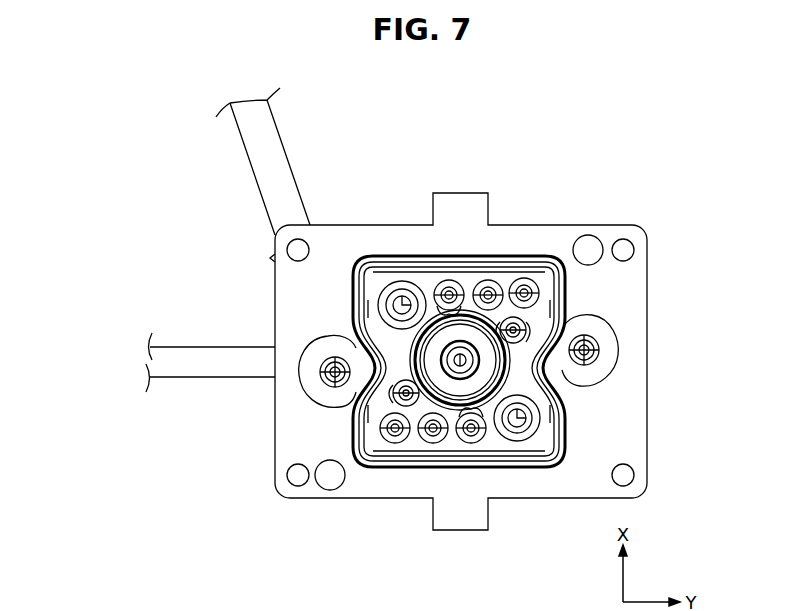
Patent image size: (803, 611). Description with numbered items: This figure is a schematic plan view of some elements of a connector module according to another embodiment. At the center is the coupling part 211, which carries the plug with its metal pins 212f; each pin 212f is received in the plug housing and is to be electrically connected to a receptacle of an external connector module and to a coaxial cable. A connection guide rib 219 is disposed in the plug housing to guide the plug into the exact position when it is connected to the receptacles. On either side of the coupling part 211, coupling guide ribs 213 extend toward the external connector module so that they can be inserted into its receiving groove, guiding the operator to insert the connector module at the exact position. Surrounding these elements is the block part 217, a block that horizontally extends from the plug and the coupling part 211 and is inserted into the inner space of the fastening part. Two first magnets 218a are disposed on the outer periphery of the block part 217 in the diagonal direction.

The block part 217 is at (634, 403).
The coupling part 211 is at (409, 256).
The connection guide rib 219 is at (402, 300).
The pin 212f is at (462, 352).
The first magnet 218a is at (588, 235).
The coupling guide rib 213 is at (322, 360).